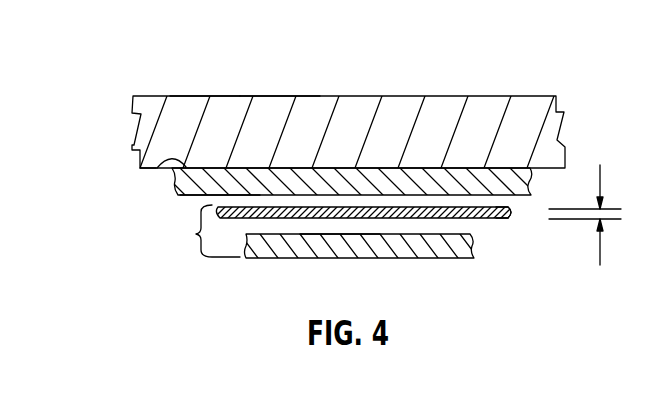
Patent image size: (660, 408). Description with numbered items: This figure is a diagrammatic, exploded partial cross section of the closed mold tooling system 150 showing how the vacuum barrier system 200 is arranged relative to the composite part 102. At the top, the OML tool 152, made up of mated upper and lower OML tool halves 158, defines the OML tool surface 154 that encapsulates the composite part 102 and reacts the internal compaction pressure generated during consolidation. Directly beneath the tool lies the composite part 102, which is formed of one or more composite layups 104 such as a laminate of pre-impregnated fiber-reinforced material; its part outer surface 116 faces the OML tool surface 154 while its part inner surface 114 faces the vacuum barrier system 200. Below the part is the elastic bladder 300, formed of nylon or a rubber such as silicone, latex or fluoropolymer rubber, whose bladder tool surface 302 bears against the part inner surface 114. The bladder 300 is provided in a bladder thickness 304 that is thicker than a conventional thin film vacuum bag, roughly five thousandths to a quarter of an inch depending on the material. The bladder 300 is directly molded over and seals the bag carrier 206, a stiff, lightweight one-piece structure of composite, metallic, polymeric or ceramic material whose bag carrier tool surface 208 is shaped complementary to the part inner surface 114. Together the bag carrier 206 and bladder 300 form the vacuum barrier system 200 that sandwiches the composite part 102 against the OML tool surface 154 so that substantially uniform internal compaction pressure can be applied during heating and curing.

The closed mold tooling system 150 is at (152, 62).
The composite part 102 is at (511, 173).
The composite layups 104 is at (473, 173).
The part inner surface 114 is at (190, 197).
The part outer surface 116 is at (157, 168).
The OML tool 152 is at (204, 96).
The OML tool surface 154 is at (140, 167).
The OML tool halves 158 is at (275, 96).
The vacuum barrier system 200 is at (197, 231).
The bag carrier 206 is at (275, 259).
The bag carrier tool surface 208 is at (337, 233).
The bladder 300 is at (507, 220).
The bladder tool surface 302 is at (498, 219).
The bladder thickness 304 is at (600, 256).